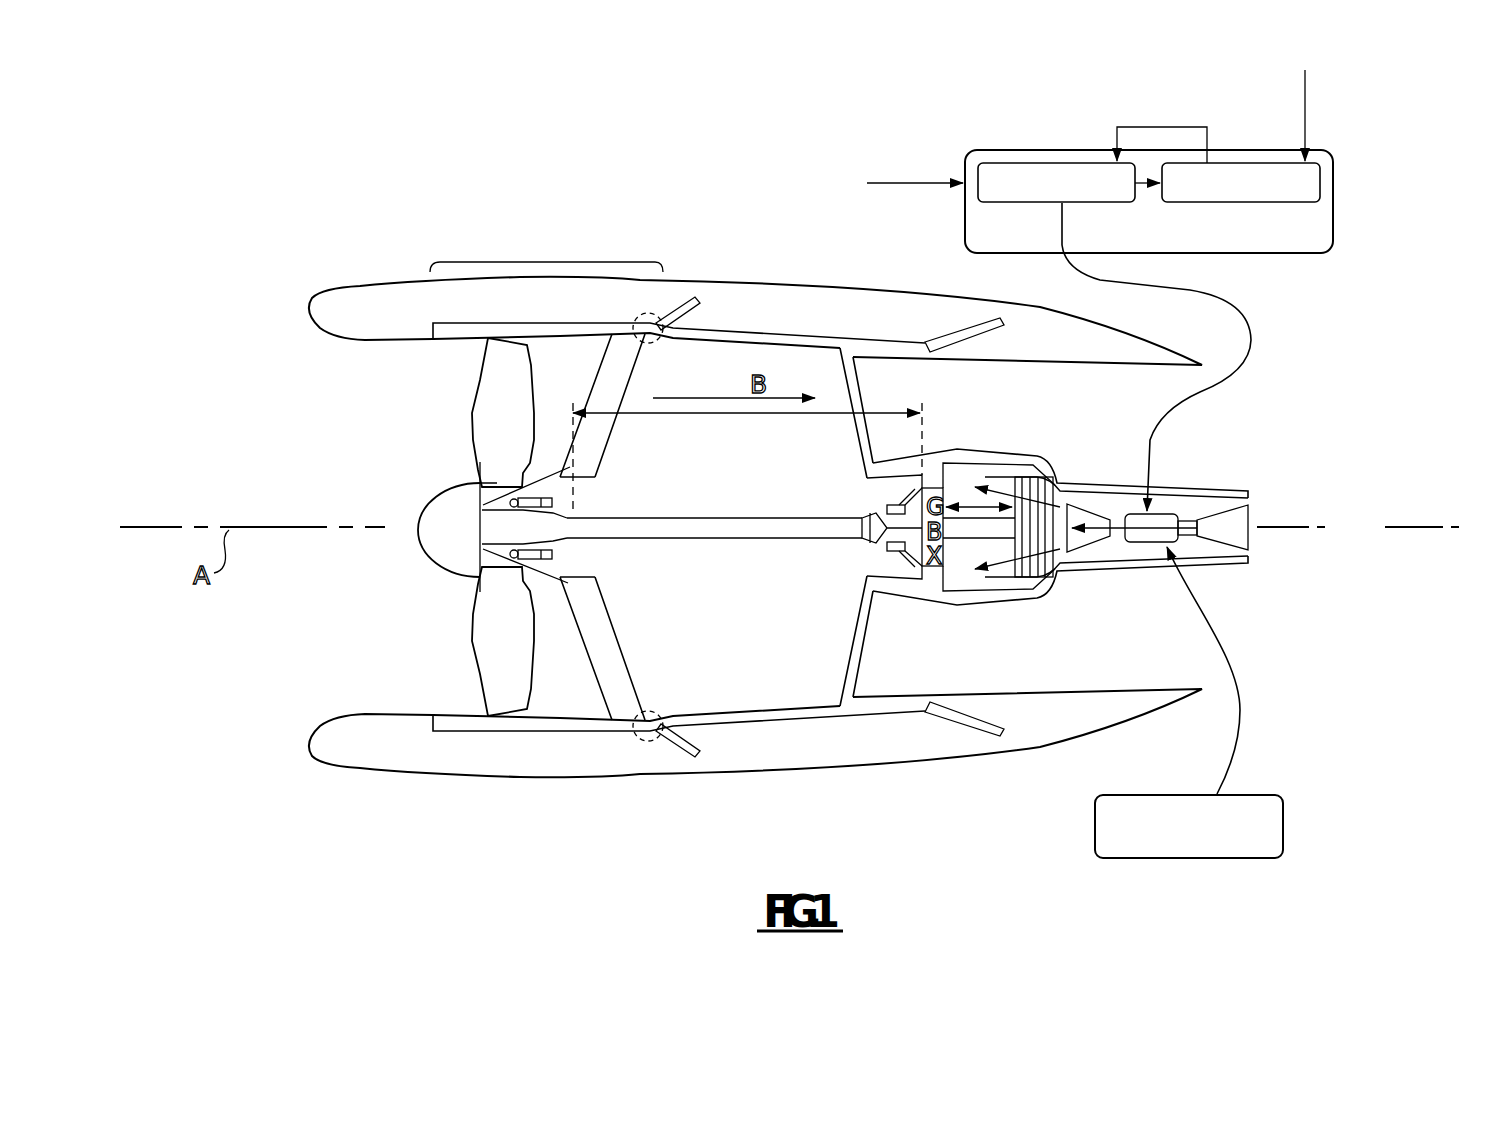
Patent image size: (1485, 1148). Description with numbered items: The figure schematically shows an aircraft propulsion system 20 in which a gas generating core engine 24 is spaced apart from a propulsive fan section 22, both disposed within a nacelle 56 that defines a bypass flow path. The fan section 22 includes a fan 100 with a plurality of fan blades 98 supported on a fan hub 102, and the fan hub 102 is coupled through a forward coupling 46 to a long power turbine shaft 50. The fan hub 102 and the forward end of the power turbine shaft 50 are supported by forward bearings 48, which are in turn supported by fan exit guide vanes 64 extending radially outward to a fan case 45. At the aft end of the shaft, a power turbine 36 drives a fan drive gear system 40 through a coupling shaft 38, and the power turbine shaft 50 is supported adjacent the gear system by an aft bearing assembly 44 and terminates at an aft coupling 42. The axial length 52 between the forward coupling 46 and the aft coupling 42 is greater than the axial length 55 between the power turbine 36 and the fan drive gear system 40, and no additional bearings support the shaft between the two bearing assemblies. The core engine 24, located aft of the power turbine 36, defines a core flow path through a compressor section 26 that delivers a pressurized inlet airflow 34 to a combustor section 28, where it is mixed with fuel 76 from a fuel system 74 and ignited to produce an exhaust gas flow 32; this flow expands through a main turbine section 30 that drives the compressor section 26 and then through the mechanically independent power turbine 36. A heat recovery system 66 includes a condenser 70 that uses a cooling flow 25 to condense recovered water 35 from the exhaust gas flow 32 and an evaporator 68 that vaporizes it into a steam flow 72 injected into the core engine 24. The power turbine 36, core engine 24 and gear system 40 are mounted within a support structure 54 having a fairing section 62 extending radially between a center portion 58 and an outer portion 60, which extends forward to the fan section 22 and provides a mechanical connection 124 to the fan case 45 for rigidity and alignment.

The aircraft propulsion system 20 is at (376, 228).
The fan section 22 is at (677, 273).
The core engine 24 is at (1196, 483).
The cooling flow 25 is at (1307, 95).
The compressor section 26 is at (1235, 545).
The combustor section 28 is at (1157, 544).
The main turbine section 30 is at (1080, 553).
The exhaust gas flow 32 is at (998, 572).
The pressurized inlet airflow 34 is at (1254, 507).
The recovered water 35 is at (1117, 127).
The power turbine 36 is at (1047, 583).
The coupling shaft 38 is at (992, 537).
The fan drive gear system 40 is at (937, 575).
The aft coupling 42 is at (876, 528).
The aft bearing assembly 44 is at (878, 551).
The fan case 45 is at (538, 332).
The forward coupling 46 is at (568, 540).
The forward bearings 48 is at (570, 560).
The power turbine shaft 50 is at (723, 540).
The axial length 52 is at (723, 417).
The support structure 54 is at (731, 745).
The axial length 55 is at (965, 503).
The nacelle 56 is at (550, 758).
The center portion 58 is at (1012, 457).
The outer portion 60 is at (803, 723).
The fairing section 62 is at (862, 392).
The fan exit guide vanes 64 is at (632, 381).
The heat recovery system 66 is at (1188, 178).
The evaporator 68 is at (1045, 163).
The condenser 70 is at (1240, 163).
The steam flow 72 is at (1250, 338).
The fuel system 74 is at (1285, 813).
The fuel 76 is at (1240, 710).
The fan blades 98 is at (468, 406).
The fan 100 is at (420, 527).
The fan hub 102 is at (460, 532).
The mechanical connection 124 is at (645, 748).